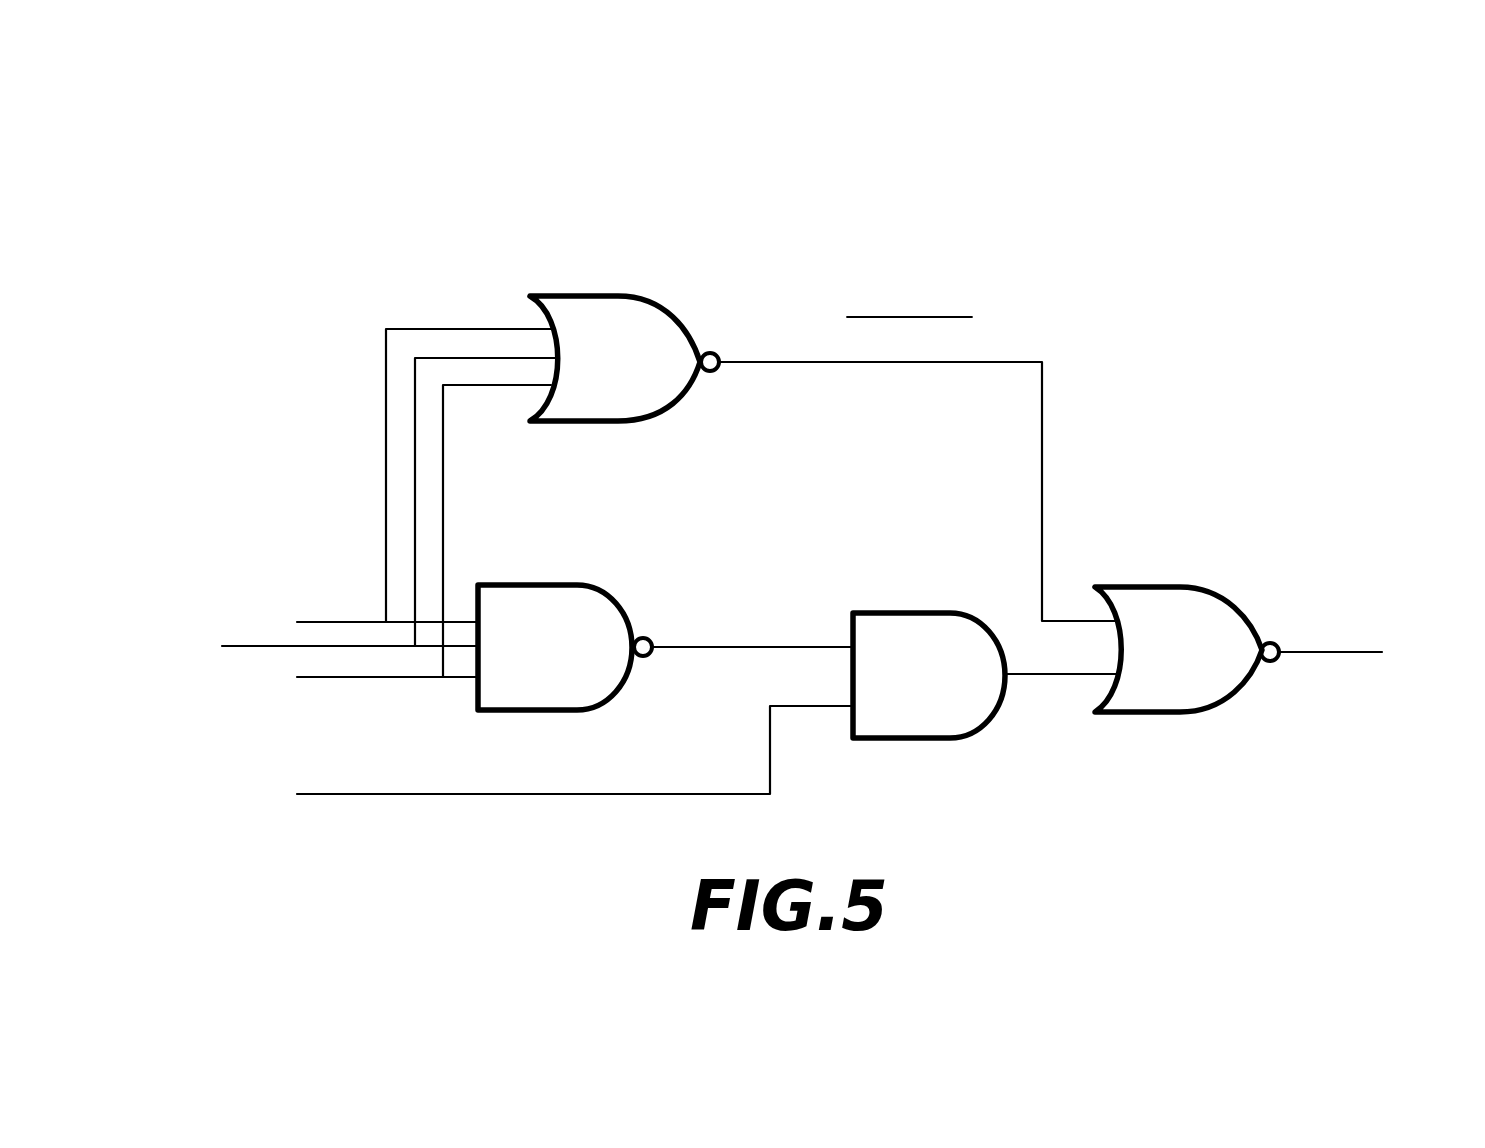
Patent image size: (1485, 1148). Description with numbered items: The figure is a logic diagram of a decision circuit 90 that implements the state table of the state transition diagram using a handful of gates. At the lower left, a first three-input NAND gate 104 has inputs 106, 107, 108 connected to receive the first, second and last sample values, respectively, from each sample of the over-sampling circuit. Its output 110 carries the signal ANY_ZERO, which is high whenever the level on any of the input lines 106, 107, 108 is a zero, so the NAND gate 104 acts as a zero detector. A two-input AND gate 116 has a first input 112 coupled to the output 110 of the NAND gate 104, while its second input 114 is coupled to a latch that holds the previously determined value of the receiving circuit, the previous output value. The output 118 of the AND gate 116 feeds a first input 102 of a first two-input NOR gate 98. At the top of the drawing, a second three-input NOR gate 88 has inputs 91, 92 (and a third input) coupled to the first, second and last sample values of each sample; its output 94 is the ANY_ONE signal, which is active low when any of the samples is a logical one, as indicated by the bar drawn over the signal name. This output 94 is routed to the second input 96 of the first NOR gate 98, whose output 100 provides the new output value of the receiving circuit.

The decision circuit 90 is at (888, 225).
The second three-input NOR gate 88 is at (618, 296).
The input of the second NOR gate 91 is at (545, 326).
The input of the second NOR gate 92 is at (545, 387).
The output of the second NOR gate 94 is at (723, 355).
The first three-input NAND gate 104 is at (532, 585).
The input of the NAND gate 106 is at (478, 620).
The input of the NAND gate 107 is at (470, 646).
The input of the NAND gate 108 is at (470, 677).
The output of the NAND gate 110 is at (655, 642).
The first input of the AND gate 112 is at (852, 645).
The second input of the AND gate 114 is at (850, 706).
The two-input AND gate 116 is at (905, 613).
The output of the AND gate 118 is at (1007, 678).
The first input of the first NOR gate 102 is at (1110, 672).
The second input of the first NOR gate 96 is at (1108, 620).
The first two-input NOR gate 98 is at (1200, 588).
The output of the first NOR gate 100 is at (1277, 660).